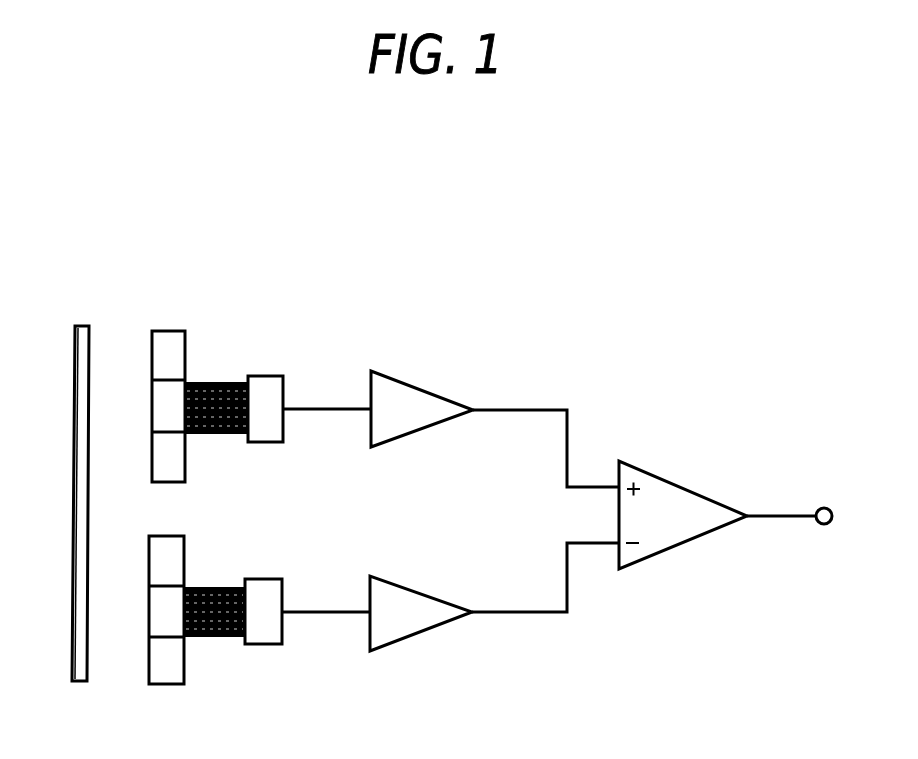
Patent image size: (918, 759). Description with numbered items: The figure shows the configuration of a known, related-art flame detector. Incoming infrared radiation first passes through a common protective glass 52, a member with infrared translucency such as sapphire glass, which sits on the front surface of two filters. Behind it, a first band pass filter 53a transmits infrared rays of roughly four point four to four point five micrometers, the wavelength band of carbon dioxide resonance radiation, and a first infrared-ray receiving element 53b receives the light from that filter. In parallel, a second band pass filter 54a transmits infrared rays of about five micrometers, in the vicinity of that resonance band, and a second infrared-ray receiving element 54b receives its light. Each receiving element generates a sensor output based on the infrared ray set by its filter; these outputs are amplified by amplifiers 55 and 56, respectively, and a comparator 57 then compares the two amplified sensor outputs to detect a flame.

The common protective glass 52 is at (75, 320).
The first band pass filter 53a is at (155, 323).
The first infrared-ray receiving element 53b is at (260, 368).
The second band pass filter 54a is at (160, 676).
The second infrared-ray receiving element 54b is at (255, 638).
The amplifier 55 is at (394, 371).
The amplifier 56 is at (405, 629).
The comparator 57 is at (690, 483).